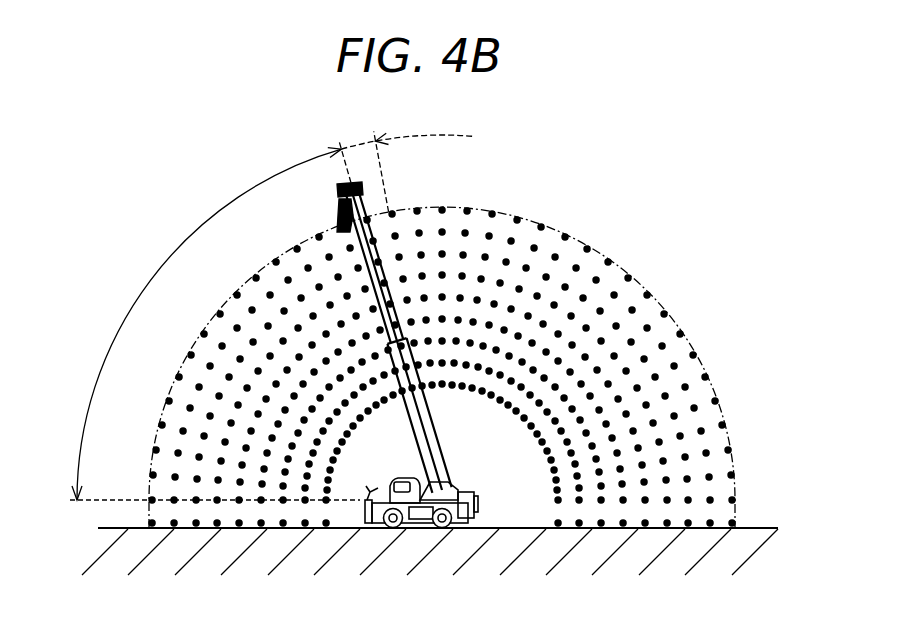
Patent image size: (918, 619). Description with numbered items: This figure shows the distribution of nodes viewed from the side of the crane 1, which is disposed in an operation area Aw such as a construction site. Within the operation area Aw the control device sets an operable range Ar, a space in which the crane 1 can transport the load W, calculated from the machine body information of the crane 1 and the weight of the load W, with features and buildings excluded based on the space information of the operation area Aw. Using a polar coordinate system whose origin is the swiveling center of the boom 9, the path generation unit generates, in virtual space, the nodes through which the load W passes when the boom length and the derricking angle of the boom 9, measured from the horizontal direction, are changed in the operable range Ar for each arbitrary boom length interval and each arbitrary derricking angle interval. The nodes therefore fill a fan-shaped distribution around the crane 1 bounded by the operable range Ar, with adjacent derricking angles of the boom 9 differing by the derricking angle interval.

The crane 1 is at (198, 262).
The boom 9 is at (432, 452).
The load W is at (337, 228).
The operable range Ar is at (722, 436).
The operation area Aw is at (100, 115).